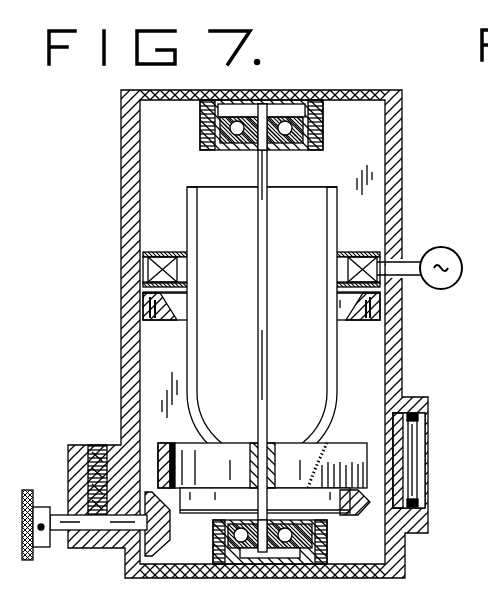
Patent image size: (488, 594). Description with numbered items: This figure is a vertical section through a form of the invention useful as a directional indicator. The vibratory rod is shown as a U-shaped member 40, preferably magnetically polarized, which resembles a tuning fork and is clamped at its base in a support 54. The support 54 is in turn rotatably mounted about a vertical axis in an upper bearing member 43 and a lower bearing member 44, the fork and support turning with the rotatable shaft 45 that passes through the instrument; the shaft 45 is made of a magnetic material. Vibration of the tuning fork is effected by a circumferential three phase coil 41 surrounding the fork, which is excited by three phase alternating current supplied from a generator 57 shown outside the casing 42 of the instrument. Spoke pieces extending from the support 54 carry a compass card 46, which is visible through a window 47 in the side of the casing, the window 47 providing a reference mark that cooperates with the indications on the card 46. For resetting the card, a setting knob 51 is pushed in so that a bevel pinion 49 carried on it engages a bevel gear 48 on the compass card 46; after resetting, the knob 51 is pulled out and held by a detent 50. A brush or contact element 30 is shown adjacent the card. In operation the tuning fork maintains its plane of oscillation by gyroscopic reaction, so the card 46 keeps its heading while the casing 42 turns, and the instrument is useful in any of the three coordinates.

The brush element 30 is at (343, 488).
The U-shaped member 40 is at (196, 193).
The circumferential three phase coil 41 is at (173, 254).
The housing 42 is at (121, 346).
The bearing member 43 is at (270, 150).
The bearing member 44 is at (327, 543).
The rotatable shaft 45 is at (268, 232).
The compass card 46 is at (362, 443).
The window 47 is at (417, 430).
The bevel gear 48 is at (357, 510).
The bevel pinion 49 is at (160, 540).
The detent 50 is at (97, 532).
The setting knob 51 is at (30, 560).
The support 54 is at (280, 440).
The generator 57 is at (459, 256).